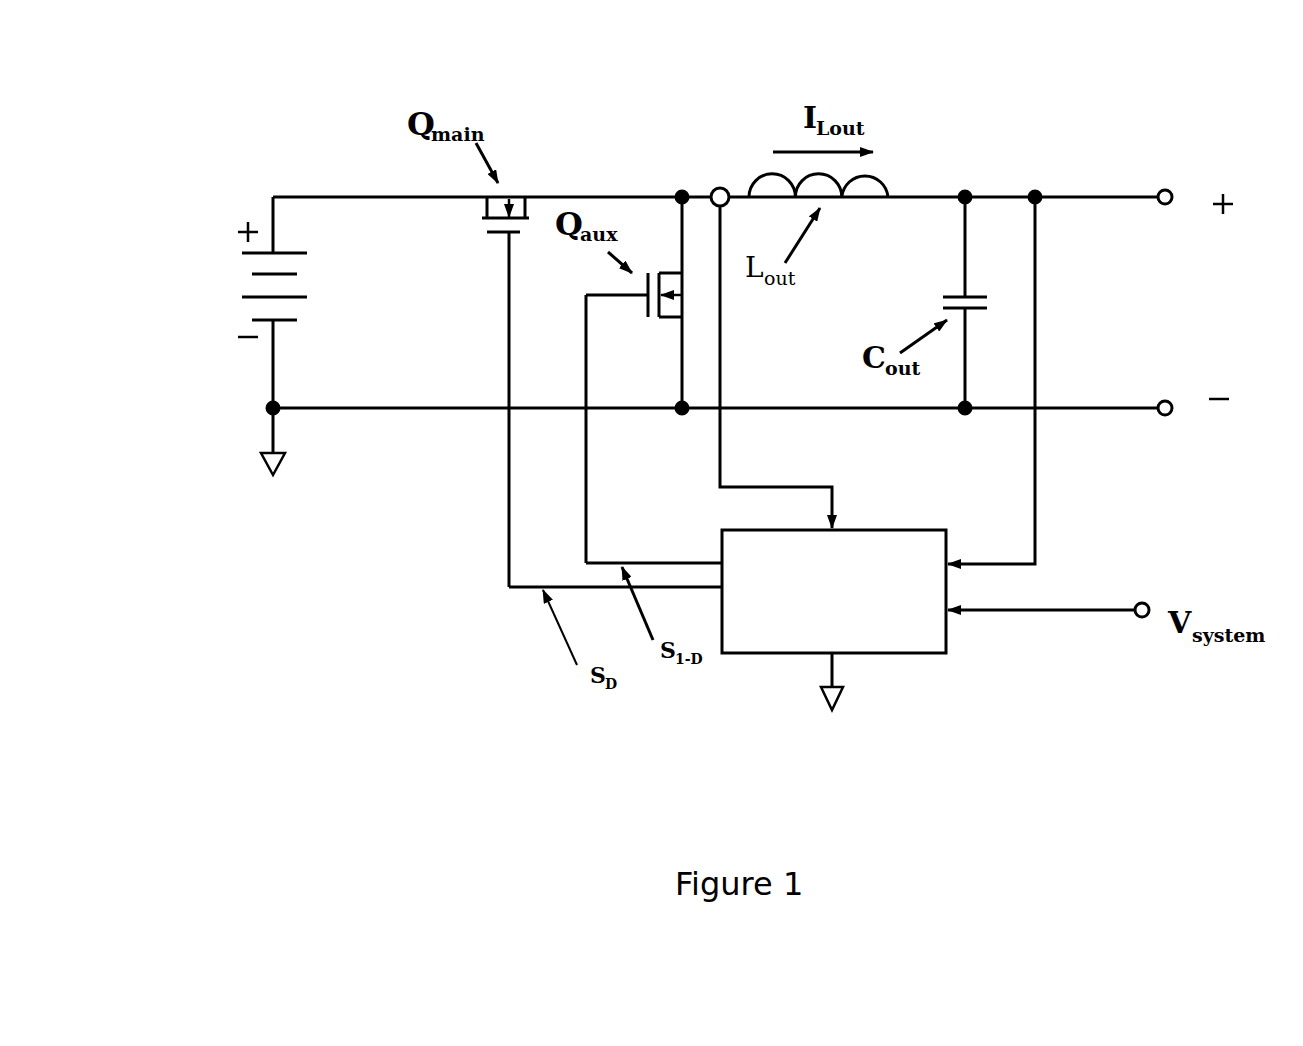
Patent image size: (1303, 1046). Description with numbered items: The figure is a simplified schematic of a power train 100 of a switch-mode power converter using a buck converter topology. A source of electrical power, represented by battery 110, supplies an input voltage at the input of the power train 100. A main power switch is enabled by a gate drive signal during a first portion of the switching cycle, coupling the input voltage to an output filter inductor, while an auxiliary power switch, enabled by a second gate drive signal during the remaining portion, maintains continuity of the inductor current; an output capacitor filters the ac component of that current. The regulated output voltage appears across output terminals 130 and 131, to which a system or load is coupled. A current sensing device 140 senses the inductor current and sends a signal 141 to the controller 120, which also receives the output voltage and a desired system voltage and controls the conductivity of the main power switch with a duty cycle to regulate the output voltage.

The power train 100 is at (1096, 101).
The battery 110 is at (227, 262).
The controller 120 is at (893, 642).
The output terminal 130 is at (1180, 185).
The output terminal 131 is at (1176, 419).
The current sensing device 140 is at (710, 175).
The signal 141 is at (845, 497).